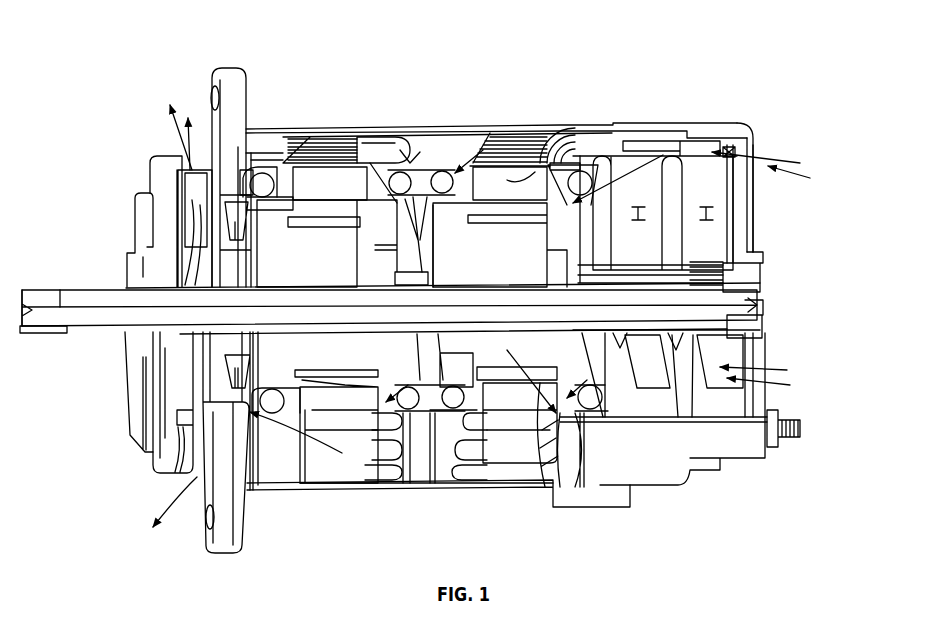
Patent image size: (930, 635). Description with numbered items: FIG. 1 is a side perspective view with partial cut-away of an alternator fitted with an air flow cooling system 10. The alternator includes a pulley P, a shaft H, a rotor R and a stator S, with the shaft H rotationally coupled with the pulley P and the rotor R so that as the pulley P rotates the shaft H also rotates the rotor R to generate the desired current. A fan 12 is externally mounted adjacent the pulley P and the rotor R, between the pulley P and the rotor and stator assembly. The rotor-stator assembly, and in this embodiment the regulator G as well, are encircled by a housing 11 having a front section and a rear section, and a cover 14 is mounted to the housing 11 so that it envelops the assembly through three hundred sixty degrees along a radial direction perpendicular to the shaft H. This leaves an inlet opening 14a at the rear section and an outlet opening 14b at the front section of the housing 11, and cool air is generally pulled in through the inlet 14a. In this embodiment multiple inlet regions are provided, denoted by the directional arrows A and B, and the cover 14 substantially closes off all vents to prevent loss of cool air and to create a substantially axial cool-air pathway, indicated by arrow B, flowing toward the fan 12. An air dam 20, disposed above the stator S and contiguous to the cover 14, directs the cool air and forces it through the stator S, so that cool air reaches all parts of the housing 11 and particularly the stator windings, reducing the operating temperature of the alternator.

The cooling system 10 is at (804, 122).
The housing 11 is at (278, 127).
The fan 12 is at (140, 233).
The cover 14 is at (442, 131).
The inlet opening 14a is at (750, 143).
The outlet opening 14b is at (187, 163).
The air dam 20 is at (400, 143).
The directional arrow A is at (494, 130).
The directional arrow B is at (472, 450).
The regulator G is at (720, 348).
The shaft H is at (115, 330).
The pulley P is at (57, 333).
The rotor R is at (355, 347).
The stator S is at (548, 148).